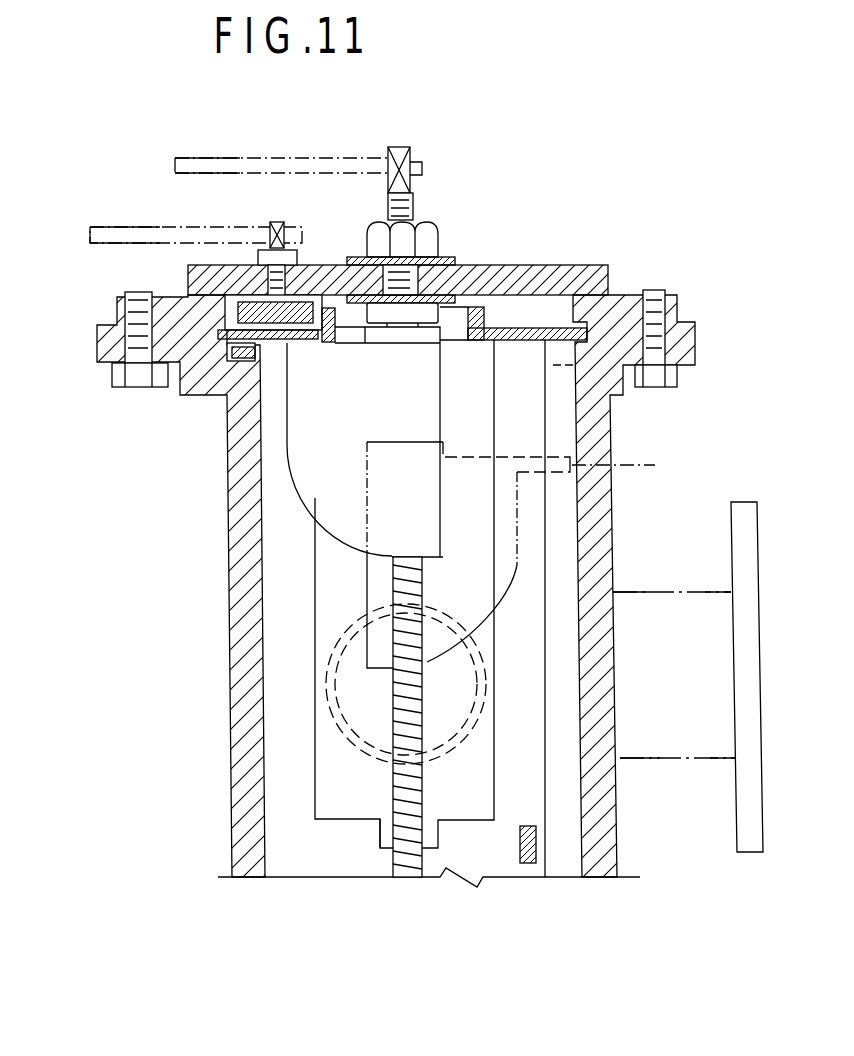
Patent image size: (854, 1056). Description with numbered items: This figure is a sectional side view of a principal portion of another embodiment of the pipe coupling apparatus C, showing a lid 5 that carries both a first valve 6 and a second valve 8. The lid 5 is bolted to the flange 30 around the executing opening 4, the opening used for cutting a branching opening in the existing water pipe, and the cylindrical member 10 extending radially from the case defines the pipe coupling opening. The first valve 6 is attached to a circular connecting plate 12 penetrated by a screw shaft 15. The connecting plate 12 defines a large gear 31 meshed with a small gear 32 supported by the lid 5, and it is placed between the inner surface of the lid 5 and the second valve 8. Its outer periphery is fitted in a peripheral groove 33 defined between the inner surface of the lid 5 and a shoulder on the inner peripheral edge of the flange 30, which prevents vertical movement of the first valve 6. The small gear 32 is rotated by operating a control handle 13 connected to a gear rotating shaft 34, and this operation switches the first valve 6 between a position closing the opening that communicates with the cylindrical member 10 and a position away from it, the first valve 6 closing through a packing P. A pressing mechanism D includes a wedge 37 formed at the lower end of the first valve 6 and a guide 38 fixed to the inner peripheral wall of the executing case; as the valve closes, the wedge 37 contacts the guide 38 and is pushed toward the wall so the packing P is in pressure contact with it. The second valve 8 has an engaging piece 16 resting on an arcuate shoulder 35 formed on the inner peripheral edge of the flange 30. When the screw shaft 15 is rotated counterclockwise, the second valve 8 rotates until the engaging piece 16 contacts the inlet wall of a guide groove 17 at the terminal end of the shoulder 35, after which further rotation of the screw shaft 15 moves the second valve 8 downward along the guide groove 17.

The executing opening 4 is at (277, 374).
The lid 5 is at (588, 265).
The first valve 6 is at (327, 738).
The second valve 8 is at (307, 463).
The cylindrical member 10 is at (702, 748).
The connecting plate 12 is at (520, 330).
The control handle 13 is at (118, 243).
The screw shaft 15 is at (406, 875).
The engaging piece 16 is at (247, 353).
The guide groove 17 is at (560, 508).
The flange 30 is at (685, 342).
The large gear 31 is at (487, 307).
The small gear 32 is at (252, 297).
The peripheral groove 33 is at (213, 297).
The gear rotating shaft 34 is at (280, 287).
The arcuate shoulder 35 is at (258, 348).
The wedge 37 is at (380, 840).
The guide 38 is at (528, 864).
The pipe coupling apparatus C is at (658, 252).
The pressing mechanism D is at (469, 855).
The packing P is at (337, 636).